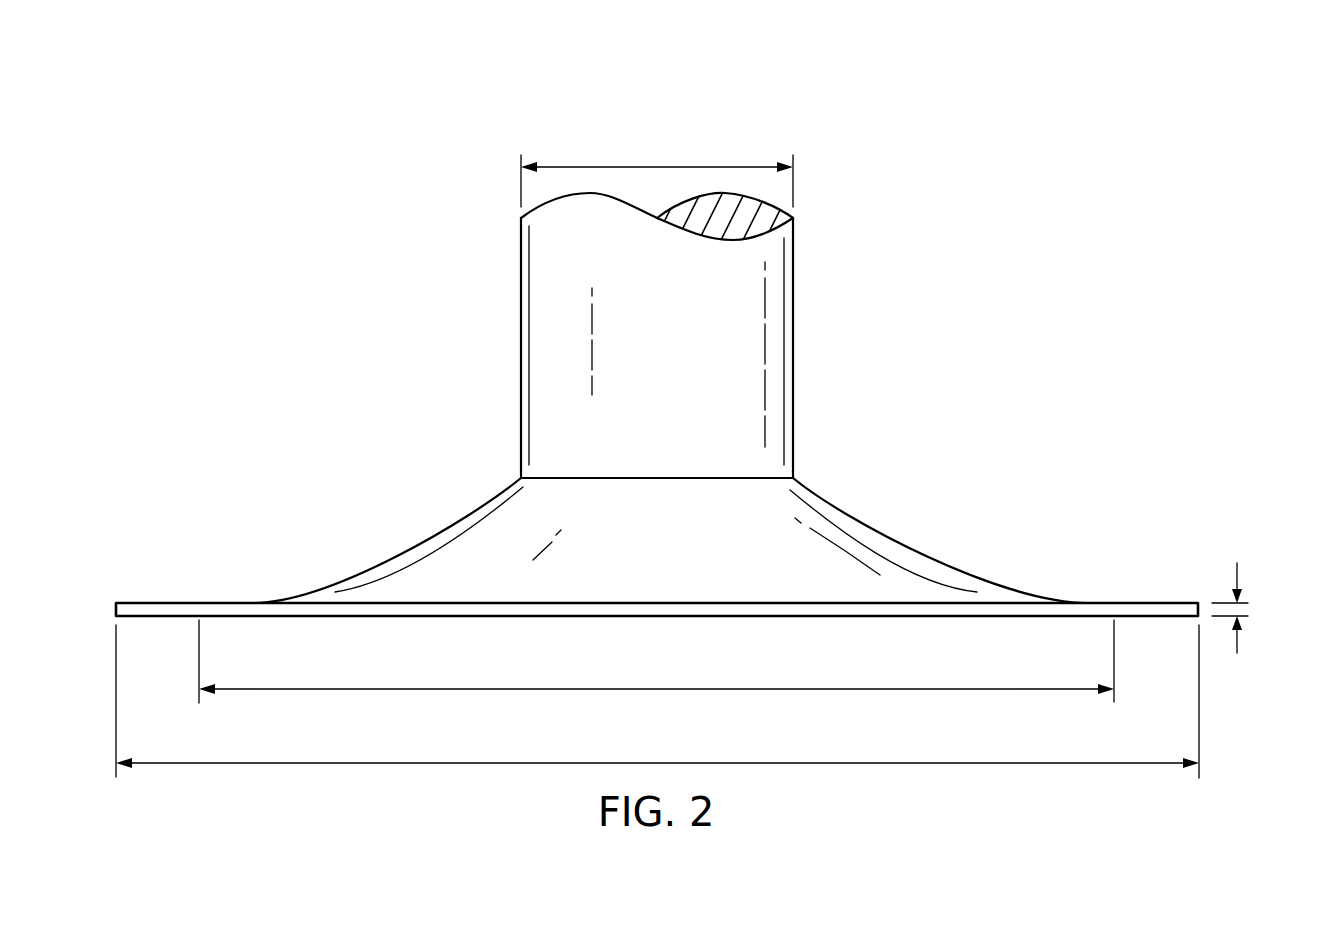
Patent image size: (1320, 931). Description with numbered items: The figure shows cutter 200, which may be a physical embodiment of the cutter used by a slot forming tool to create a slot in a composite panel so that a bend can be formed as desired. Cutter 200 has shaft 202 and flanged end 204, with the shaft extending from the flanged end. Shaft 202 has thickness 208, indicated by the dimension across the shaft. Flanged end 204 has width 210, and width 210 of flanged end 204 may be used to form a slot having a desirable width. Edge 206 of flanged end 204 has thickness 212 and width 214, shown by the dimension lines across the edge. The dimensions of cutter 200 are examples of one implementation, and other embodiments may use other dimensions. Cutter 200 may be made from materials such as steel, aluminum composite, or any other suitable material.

The cutter 200 is at (792, 112).
The shaft 202 is at (521, 312).
The flanged end 204 is at (885, 543).
The edge 206 is at (157, 601).
The thickness 208 is at (657, 166).
The width 210 is at (657, 688).
The thickness 212 is at (1237, 640).
The width 214 is at (657, 762).